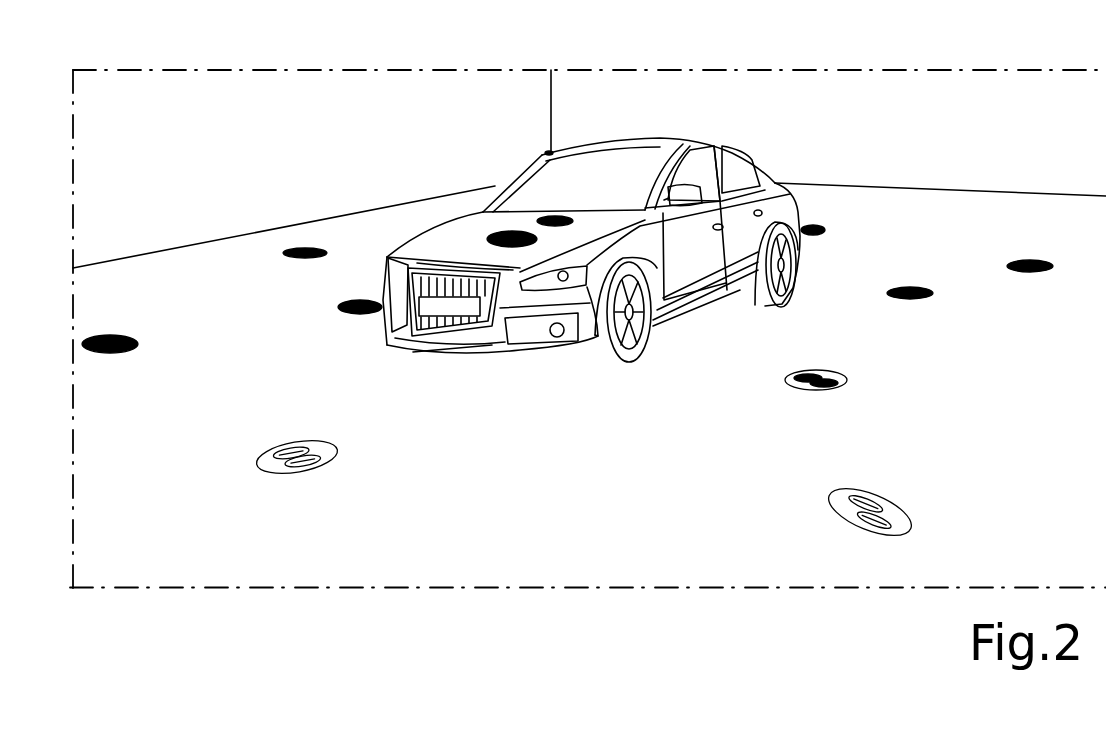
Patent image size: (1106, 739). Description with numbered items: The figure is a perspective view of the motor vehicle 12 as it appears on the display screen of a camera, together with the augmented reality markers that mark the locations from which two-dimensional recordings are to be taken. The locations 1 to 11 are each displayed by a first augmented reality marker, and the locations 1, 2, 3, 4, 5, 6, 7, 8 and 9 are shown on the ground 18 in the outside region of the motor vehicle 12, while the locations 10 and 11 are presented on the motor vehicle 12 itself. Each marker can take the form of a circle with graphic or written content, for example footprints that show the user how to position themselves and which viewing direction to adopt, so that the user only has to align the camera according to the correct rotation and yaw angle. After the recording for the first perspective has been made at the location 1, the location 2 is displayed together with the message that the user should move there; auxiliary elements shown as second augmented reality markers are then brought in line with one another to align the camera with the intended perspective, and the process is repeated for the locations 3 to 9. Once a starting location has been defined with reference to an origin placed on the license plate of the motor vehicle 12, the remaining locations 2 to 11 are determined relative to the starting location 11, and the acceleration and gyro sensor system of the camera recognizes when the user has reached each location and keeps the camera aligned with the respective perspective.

The location 1 is at (258, 460).
The location 2 is at (830, 507).
The location 3 is at (785, 379).
The location 4 is at (887, 291).
The location 5 is at (1008, 265).
The location 6 is at (825, 230).
The location 7 is at (327, 252).
The location 8 is at (338, 305).
The location 9 is at (138, 340).
The location 10 is at (498, 237).
The location 11 is at (541, 216).
The motor vehicle 12 is at (547, 153).
The ground 18 is at (966, 442).